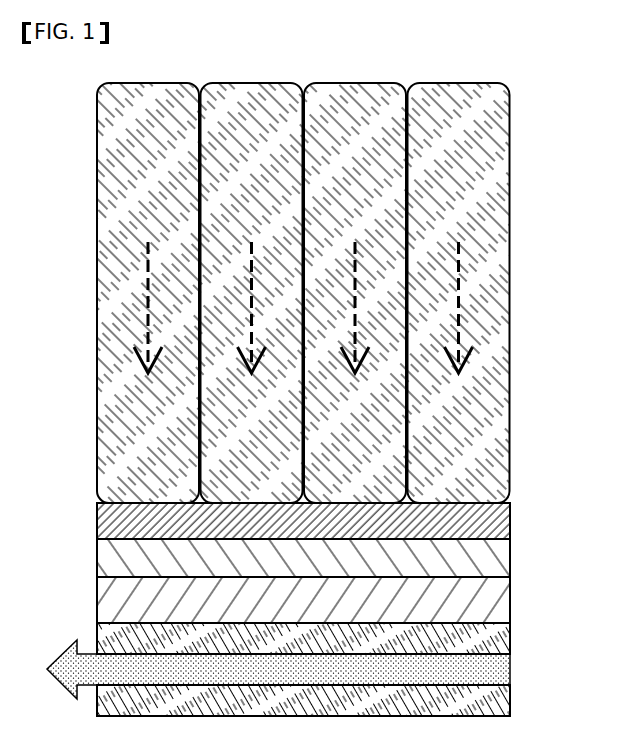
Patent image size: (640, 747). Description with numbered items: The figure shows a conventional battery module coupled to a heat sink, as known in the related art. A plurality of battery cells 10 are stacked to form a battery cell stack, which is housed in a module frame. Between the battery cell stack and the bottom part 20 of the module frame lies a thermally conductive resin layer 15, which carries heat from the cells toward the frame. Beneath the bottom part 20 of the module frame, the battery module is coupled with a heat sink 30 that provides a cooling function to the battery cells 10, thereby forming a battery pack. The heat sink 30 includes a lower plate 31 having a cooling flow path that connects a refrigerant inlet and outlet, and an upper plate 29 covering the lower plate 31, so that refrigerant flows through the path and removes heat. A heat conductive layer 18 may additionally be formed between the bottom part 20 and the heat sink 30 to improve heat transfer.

The battery cell 10 is at (485, 164).
The thermally conductive resin layer 15 is at (500, 520).
The bottom part of the module frame 20 is at (500, 557).
The heat conductive layer 18 is at (500, 600).
The upper plate 29 is at (500, 637).
The heat sink 30 is at (567, 628).
The lower plate 31 is at (500, 697).